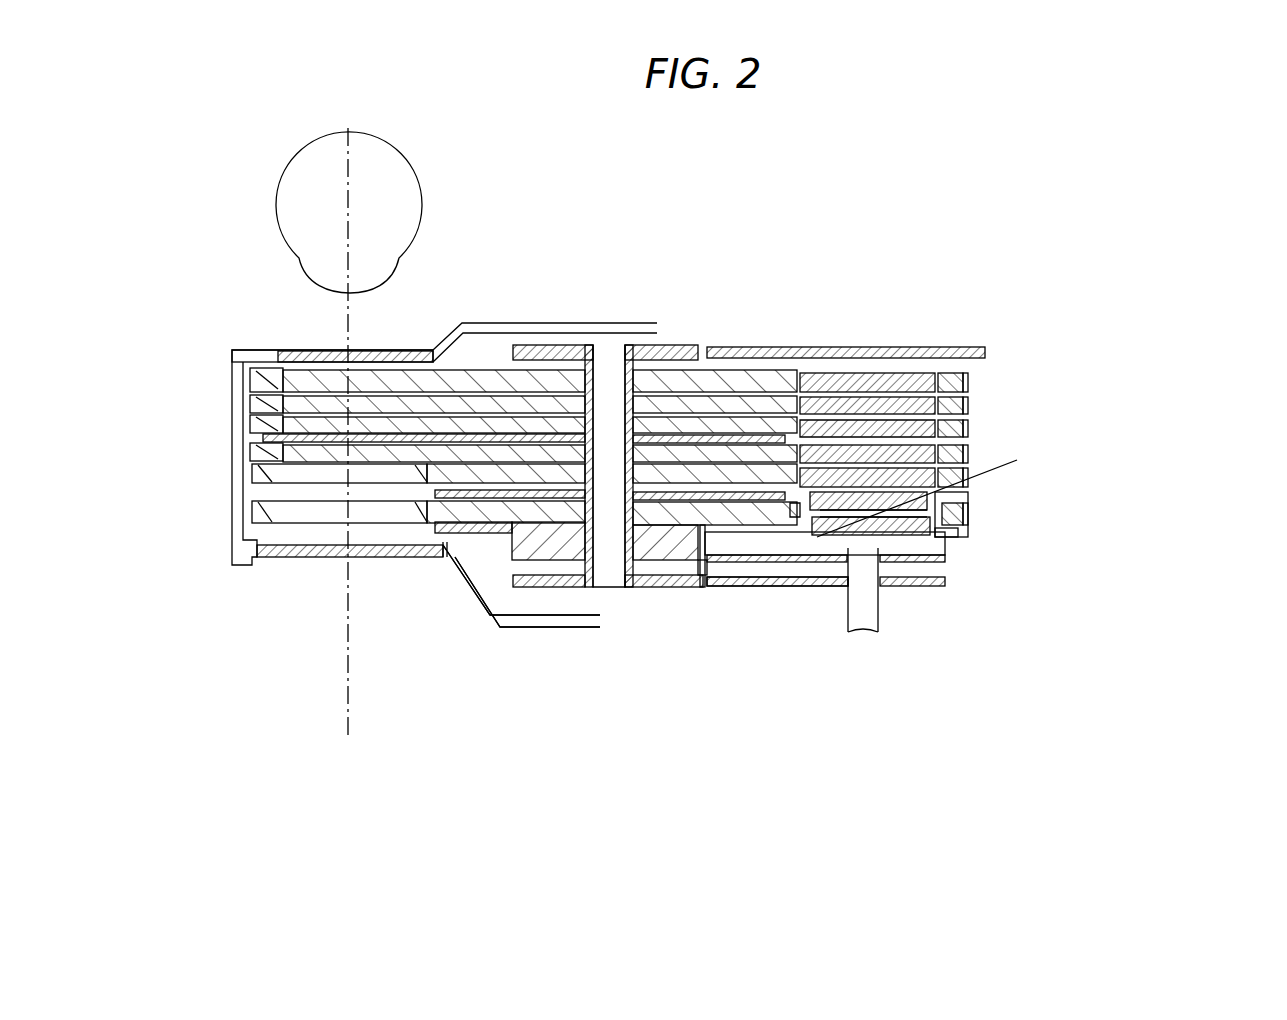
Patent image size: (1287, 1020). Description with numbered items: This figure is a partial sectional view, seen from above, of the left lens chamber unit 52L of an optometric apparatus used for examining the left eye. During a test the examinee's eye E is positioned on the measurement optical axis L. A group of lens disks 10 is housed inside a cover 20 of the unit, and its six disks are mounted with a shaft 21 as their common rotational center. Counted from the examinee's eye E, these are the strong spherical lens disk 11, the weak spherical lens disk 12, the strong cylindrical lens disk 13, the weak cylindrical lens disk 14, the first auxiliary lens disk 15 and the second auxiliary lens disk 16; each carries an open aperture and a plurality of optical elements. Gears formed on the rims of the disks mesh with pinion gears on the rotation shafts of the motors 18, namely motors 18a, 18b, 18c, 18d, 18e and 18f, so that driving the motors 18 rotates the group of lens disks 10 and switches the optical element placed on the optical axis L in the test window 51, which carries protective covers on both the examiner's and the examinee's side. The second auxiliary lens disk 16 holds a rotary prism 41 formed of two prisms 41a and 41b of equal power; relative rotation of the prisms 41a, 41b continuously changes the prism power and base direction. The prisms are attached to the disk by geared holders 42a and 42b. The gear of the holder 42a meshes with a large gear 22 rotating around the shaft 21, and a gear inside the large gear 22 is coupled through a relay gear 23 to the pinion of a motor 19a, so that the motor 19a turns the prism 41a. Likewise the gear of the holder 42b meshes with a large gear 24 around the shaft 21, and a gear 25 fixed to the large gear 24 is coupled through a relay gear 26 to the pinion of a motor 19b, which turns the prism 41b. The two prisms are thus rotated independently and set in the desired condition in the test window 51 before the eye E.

The group of lens disks 10 is at (150, 600).
The strong spherical lens disk 11 is at (263, 378).
The weak spherical lens disk 12 is at (265, 398).
The strong cylindrical lens disk 13 is at (267, 425).
The weak cylindrical lens disk 14 is at (265, 452).
The first auxiliary lens disk 15 is at (267, 472).
The second auxiliary lens disk 16 is at (267, 508).
The motors 18 is at (1180, 345).
The motor 18a is at (968, 382).
The motor 18b is at (968, 406).
The motor 18c is at (968, 428).
The motor 18d is at (968, 453).
The motor 18e is at (968, 476).
The motor 18f is at (968, 513).
The motor 19a is at (947, 558).
The motor 19b is at (947, 582).
The cover 20 is at (575, 323).
The shaft 21 is at (625, 350).
The large gear 22 is at (692, 560).
The relay gear 23 is at (737, 556).
The large gear 24 is at (663, 528).
The gear 25 is at (700, 565).
The relay gear 26 is at (768, 587).
The rotary prism 41 is at (811, 558).
The prism 41a is at (1017, 460).
The prism 41b is at (858, 565).
The holder 42a is at (958, 524).
The holder 42b is at (932, 538).
The test window 51 is at (378, 343).
The left lens chamber unit 52L is at (500, 690).
The examinee's eye E is at (423, 188).
The measurement optical axis L is at (352, 690).